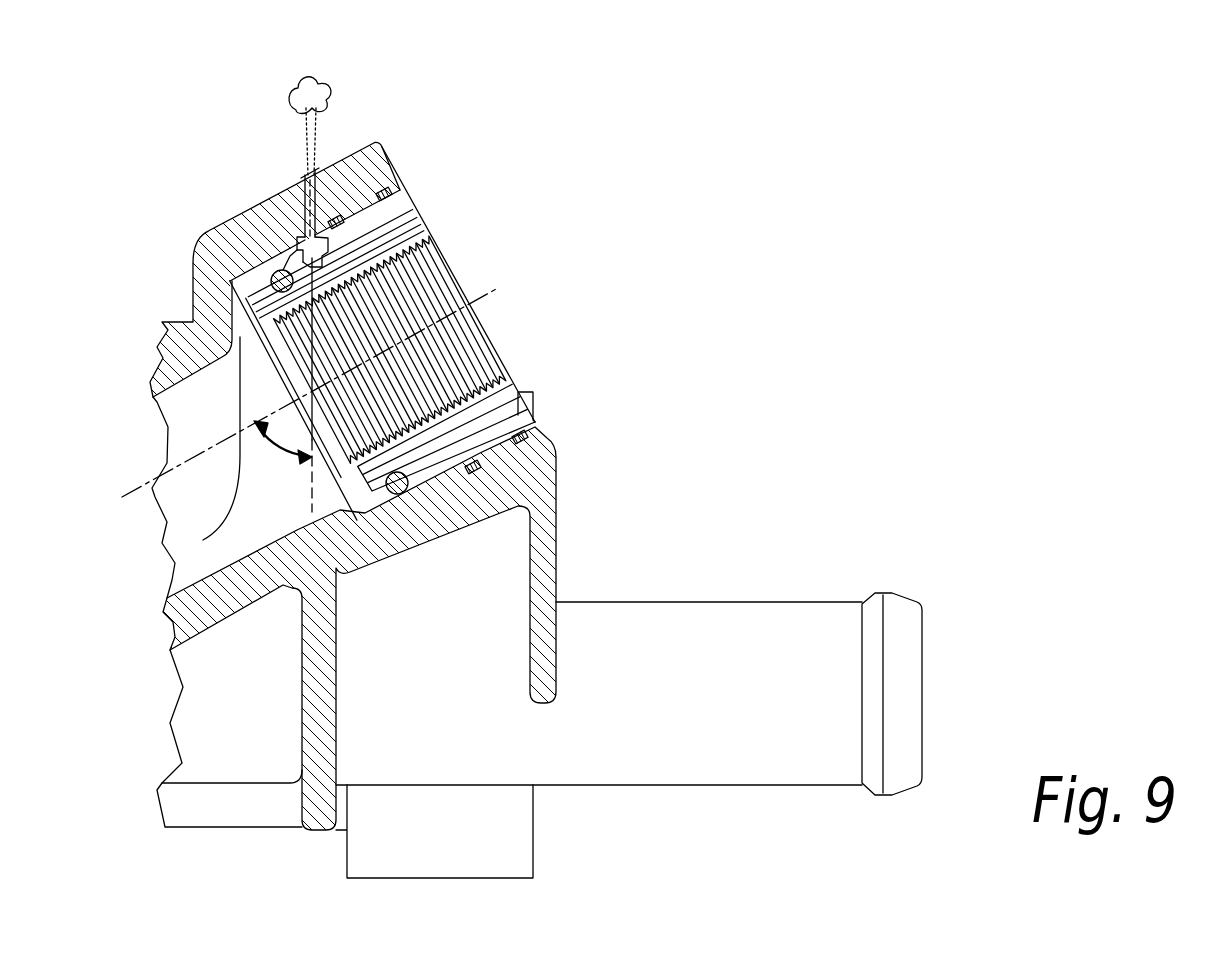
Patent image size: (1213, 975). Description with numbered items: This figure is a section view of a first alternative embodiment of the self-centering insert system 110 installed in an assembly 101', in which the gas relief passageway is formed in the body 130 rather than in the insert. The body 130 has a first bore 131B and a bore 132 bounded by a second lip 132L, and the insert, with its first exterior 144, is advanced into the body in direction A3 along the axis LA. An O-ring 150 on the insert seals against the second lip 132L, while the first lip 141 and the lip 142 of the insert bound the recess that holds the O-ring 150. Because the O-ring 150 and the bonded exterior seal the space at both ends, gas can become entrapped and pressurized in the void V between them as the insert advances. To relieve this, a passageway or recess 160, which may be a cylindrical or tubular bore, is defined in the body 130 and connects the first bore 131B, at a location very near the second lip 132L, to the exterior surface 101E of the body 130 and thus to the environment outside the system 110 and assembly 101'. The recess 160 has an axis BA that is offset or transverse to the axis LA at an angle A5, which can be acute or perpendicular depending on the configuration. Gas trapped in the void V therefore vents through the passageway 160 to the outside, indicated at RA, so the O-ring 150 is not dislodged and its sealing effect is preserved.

The system 110 is at (186, 155).
The assembly 101' is at (536, 504).
The exterior surface 101E is at (310, 228).
The body 130 is at (185, 275).
The bore surface 132 is at (252, 297).
The second lip 132L is at (308, 252).
The bore 131B is at (342, 218).
The nozzle orifice 141 is at (308, 236).
The nozzle tip 142 is at (290, 267).
The retaining ring 144 is at (381, 198).
The O-ring 150 is at (282, 272).
The passageway 160 is at (318, 180).
The spray region RA is at (298, 88).
The axis LA is at (156, 487).
The axis BA is at (312, 478).
The angle A5 is at (280, 448).
The direction A3 is at (345, 432).
The void V is at (440, 472).